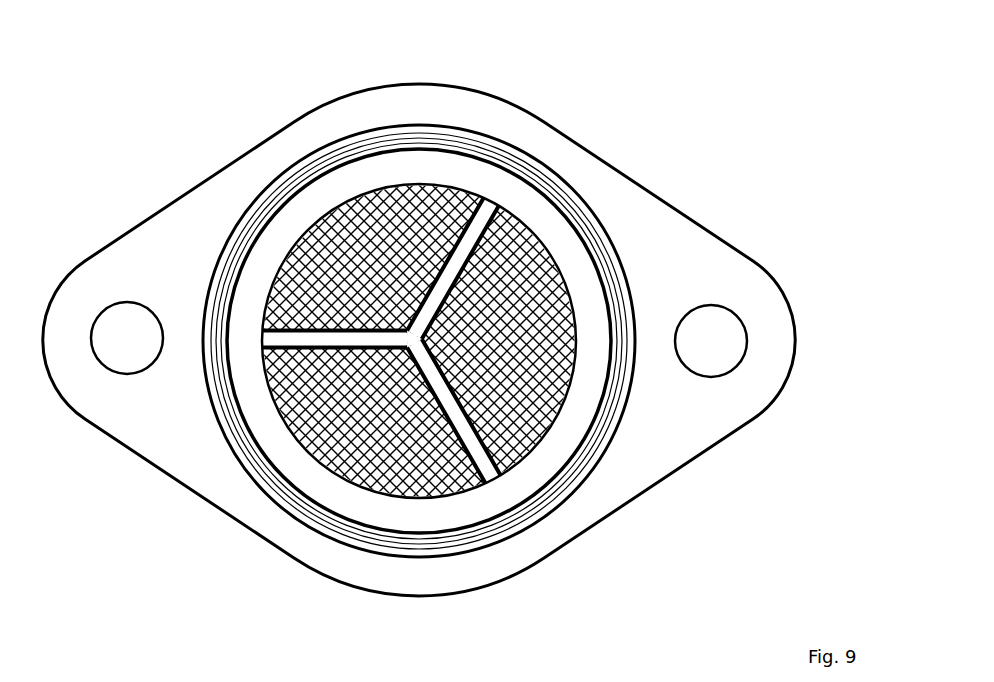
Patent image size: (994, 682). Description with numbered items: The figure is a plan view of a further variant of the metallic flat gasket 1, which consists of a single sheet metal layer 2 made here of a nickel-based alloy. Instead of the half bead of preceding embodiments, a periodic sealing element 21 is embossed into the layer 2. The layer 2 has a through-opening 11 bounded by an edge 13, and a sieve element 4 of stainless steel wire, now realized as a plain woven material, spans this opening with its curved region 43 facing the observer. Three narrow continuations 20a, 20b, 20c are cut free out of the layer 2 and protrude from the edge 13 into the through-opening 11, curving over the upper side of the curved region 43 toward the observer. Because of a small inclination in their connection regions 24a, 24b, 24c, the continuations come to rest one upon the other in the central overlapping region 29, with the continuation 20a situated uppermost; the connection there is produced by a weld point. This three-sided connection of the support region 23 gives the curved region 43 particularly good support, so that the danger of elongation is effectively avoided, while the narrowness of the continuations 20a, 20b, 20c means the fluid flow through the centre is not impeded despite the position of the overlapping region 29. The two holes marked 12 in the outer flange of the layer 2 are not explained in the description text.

The gasket 1 is at (126, 127).
The layer 2 is at (691, 425).
The sieve element 4 is at (270, 375).
The through-opening 11 is at (283, 422).
The mounting holes 12 is at (117, 350).
The edge 13 is at (297, 442).
The continuation 20a is at (310, 338).
The continuation 20b is at (503, 208).
The continuation 20c is at (480, 455).
The periodic sealing element 21 is at (608, 445).
The support region 23 is at (540, 455).
The connection region 24a is at (265, 322).
The connection region 24b is at (487, 198).
The connection region 24c is at (495, 482).
The overlapping region 29 is at (401, 338).
The curved region 43 is at (337, 410).